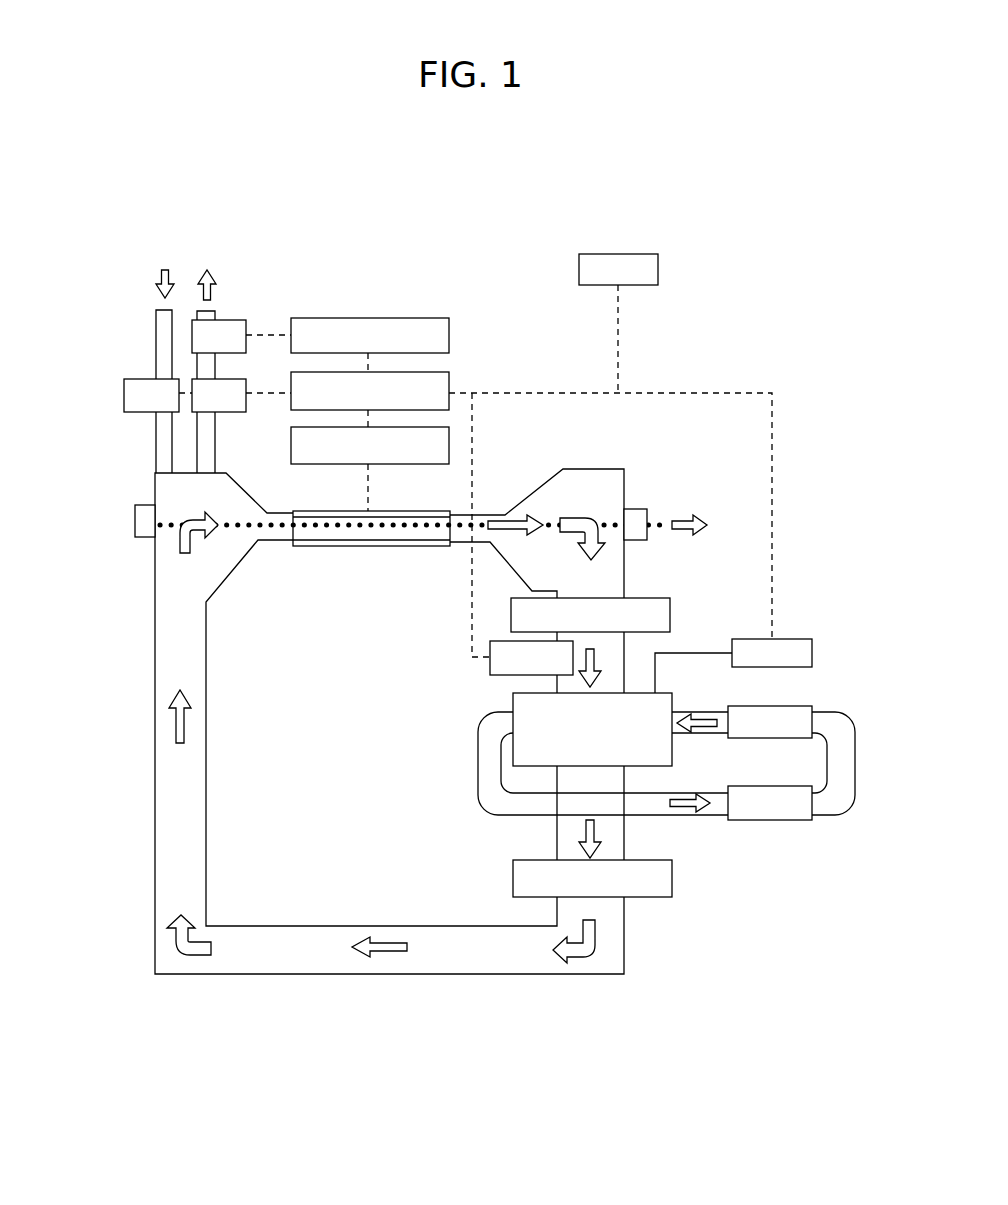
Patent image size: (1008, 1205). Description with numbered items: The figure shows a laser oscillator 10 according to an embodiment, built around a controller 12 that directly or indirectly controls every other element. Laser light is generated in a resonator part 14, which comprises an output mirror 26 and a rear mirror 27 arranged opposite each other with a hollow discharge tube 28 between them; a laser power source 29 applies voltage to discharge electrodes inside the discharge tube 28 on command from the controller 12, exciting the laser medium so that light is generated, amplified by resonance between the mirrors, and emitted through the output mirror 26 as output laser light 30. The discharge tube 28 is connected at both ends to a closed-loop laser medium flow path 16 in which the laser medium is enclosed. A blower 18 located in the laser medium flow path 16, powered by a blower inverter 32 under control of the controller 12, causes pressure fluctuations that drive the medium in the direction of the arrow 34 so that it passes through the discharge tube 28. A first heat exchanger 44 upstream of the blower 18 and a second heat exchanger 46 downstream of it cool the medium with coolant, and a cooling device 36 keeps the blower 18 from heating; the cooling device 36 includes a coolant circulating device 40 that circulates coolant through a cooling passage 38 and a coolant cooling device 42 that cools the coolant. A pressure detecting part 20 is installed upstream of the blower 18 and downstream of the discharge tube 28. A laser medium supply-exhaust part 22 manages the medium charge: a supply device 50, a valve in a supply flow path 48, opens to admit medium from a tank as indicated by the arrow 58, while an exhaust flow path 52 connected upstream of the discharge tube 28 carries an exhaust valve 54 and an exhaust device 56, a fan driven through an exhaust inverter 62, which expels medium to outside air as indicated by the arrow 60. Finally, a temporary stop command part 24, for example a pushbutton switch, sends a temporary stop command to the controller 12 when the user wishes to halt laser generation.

The laser oscillator 10 is at (740, 155).
The controller 12 is at (449, 380).
The resonator part 14 is at (320, 550).
The laser medium flow path 16 is at (165, 828).
The blower 18 is at (513, 700).
The pressure detecting part 20 is at (490, 660).
The laser medium supply-exhaust part 22 is at (114, 366).
The temporary stop command part 24 is at (600, 254).
The output mirror 26 is at (630, 509).
The rear mirror 27 is at (133, 520).
The discharge tube 28 is at (380, 546).
The laser power source 29 is at (408, 464).
The output laser light 30 is at (675, 520).
The blower inverter 32 is at (792, 639).
The arrow 34 is at (200, 552).
The cooling device 36 is at (840, 858).
The cooling passage 38 is at (842, 712).
The coolant circulating device 40 is at (800, 706).
The coolant cooling device 42 is at (778, 820).
The first heat exchanger 44 is at (660, 598).
The second heat exchanger 46 is at (672, 880).
The supply flow path 48 is at (158, 338).
The supply device 50 is at (117, 405).
The exhaust flow path 52 is at (215, 314).
The exhaust valve 54 is at (252, 408).
The exhaust device 56 is at (246, 325).
The arrow 58 is at (155, 268).
The arrow 60 is at (200, 268).
The exhaust inverter 62 is at (449, 325).